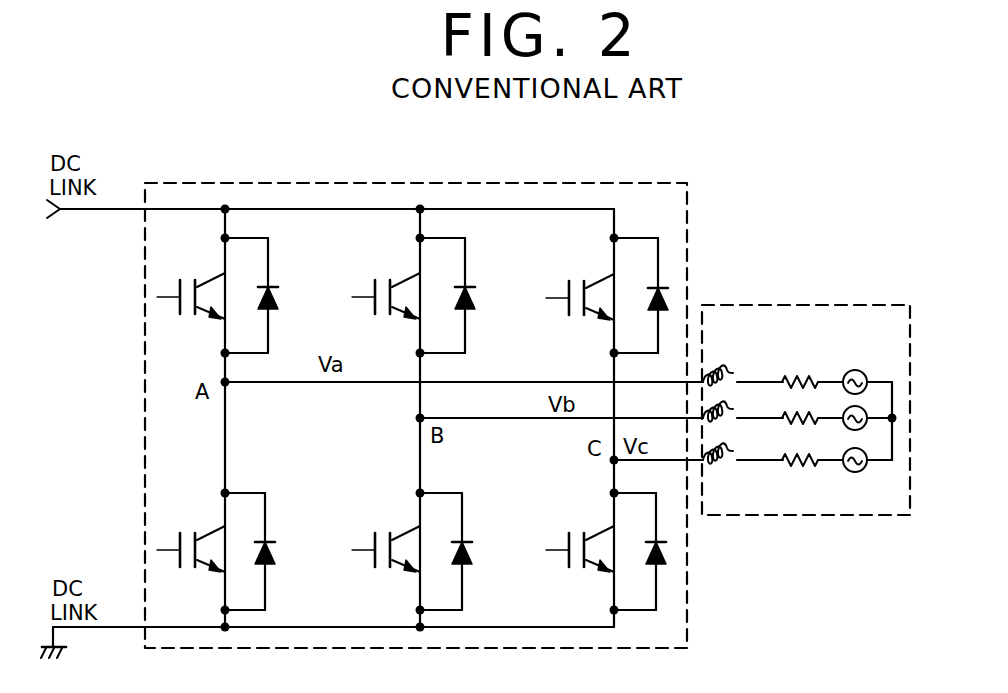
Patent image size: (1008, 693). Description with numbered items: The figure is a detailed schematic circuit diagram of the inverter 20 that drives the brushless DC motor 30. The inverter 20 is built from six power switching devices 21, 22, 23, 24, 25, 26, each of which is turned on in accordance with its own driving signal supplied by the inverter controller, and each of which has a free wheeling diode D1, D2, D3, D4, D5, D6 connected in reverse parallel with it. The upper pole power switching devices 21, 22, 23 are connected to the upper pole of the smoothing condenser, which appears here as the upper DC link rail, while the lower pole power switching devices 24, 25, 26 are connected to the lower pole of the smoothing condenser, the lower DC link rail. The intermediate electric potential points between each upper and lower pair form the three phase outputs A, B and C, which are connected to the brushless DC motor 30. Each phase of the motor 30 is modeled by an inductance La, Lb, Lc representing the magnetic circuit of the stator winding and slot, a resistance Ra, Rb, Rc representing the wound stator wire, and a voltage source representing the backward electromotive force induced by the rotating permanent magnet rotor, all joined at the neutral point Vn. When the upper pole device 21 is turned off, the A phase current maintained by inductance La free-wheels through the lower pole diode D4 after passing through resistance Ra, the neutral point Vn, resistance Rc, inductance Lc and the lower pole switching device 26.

The inverter 20 is at (232, 191).
The power switching device 21 is at (188, 295).
The power switching device 22 is at (396, 295).
The power switching device 23 is at (583, 295).
The power switching device 24 is at (187, 551).
The power switching device 25 is at (387, 551).
The power switching device 26 is at (580, 551).
The brushless DC motor 30 is at (862, 300).
The free wheeling diode D1 is at (286, 295).
The free wheeling diode D2 is at (476, 295).
The free wheeling diode D3 is at (671, 295).
The free wheeling diode D4 is at (278, 551).
The free wheeling diode D5 is at (474, 551).
The free wheeling diode D6 is at (671, 551).